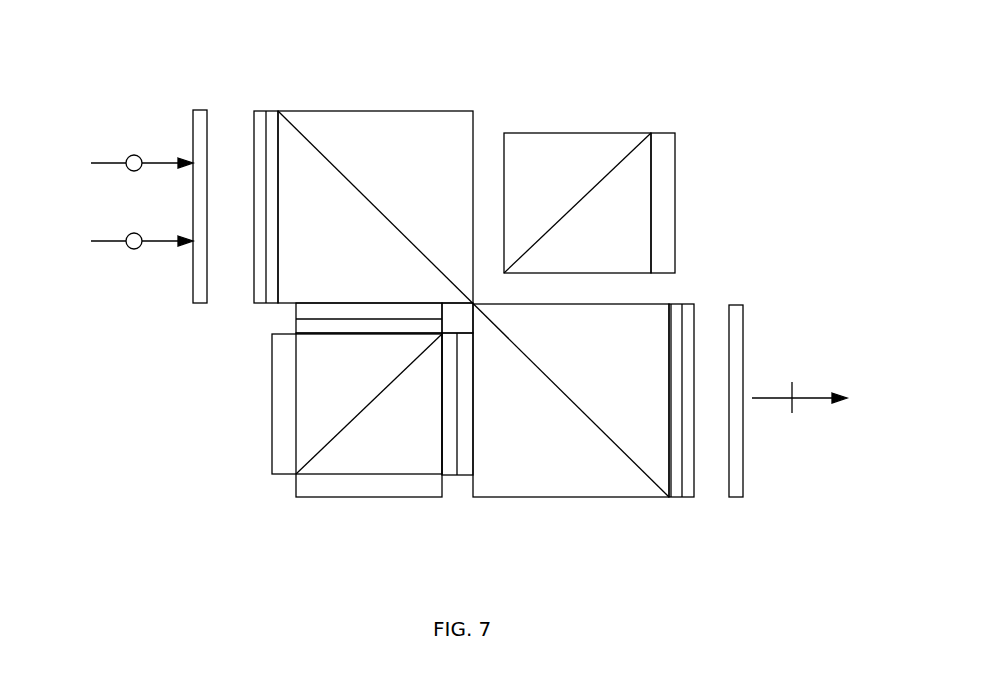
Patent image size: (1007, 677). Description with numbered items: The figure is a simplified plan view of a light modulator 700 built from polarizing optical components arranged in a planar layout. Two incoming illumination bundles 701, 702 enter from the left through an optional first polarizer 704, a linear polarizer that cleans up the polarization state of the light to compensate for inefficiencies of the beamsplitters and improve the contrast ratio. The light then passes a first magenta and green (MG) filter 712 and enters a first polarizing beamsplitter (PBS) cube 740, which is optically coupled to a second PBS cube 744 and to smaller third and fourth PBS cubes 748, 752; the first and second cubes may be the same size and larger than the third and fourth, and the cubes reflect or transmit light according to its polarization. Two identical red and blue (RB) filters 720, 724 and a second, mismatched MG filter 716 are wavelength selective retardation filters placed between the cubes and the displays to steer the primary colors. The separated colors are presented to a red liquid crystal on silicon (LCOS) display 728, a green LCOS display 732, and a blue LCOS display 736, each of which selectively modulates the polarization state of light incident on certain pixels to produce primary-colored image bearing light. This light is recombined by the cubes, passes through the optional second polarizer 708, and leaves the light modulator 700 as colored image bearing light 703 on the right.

The light modulator 700 is at (787, 94).
The incoming illumination bundle 701 is at (107, 152).
The incoming illumination bundle 702 is at (102, 253).
The colored image bearing light 703 is at (823, 412).
The first polarizer 704 is at (198, 105).
The second polarizer 708 is at (755, 305).
The magenta and green (MG) filter 712 is at (273, 102).
The magenta and green (MG) filter 716 is at (683, 298).
The red and blue (RB) filter 720 is at (455, 483).
The red and blue (RB) filter 724 is at (292, 319).
The red liquid crystal on silicon (LCOS) display 728 is at (358, 499).
The green LCOS display 732 is at (680, 230).
The blue LCOS display 736 is at (266, 380).
The first polarizing beamsplitter (PBS) cube 740 is at (371, 100).
The second polarizing beamsplitter (PBS) cube 744 is at (570, 505).
The third polarizing beamsplitter (PBS) cube 748 is at (317, 433).
The fourth polarizing beamsplitter (PBS) cube 752 is at (578, 127).